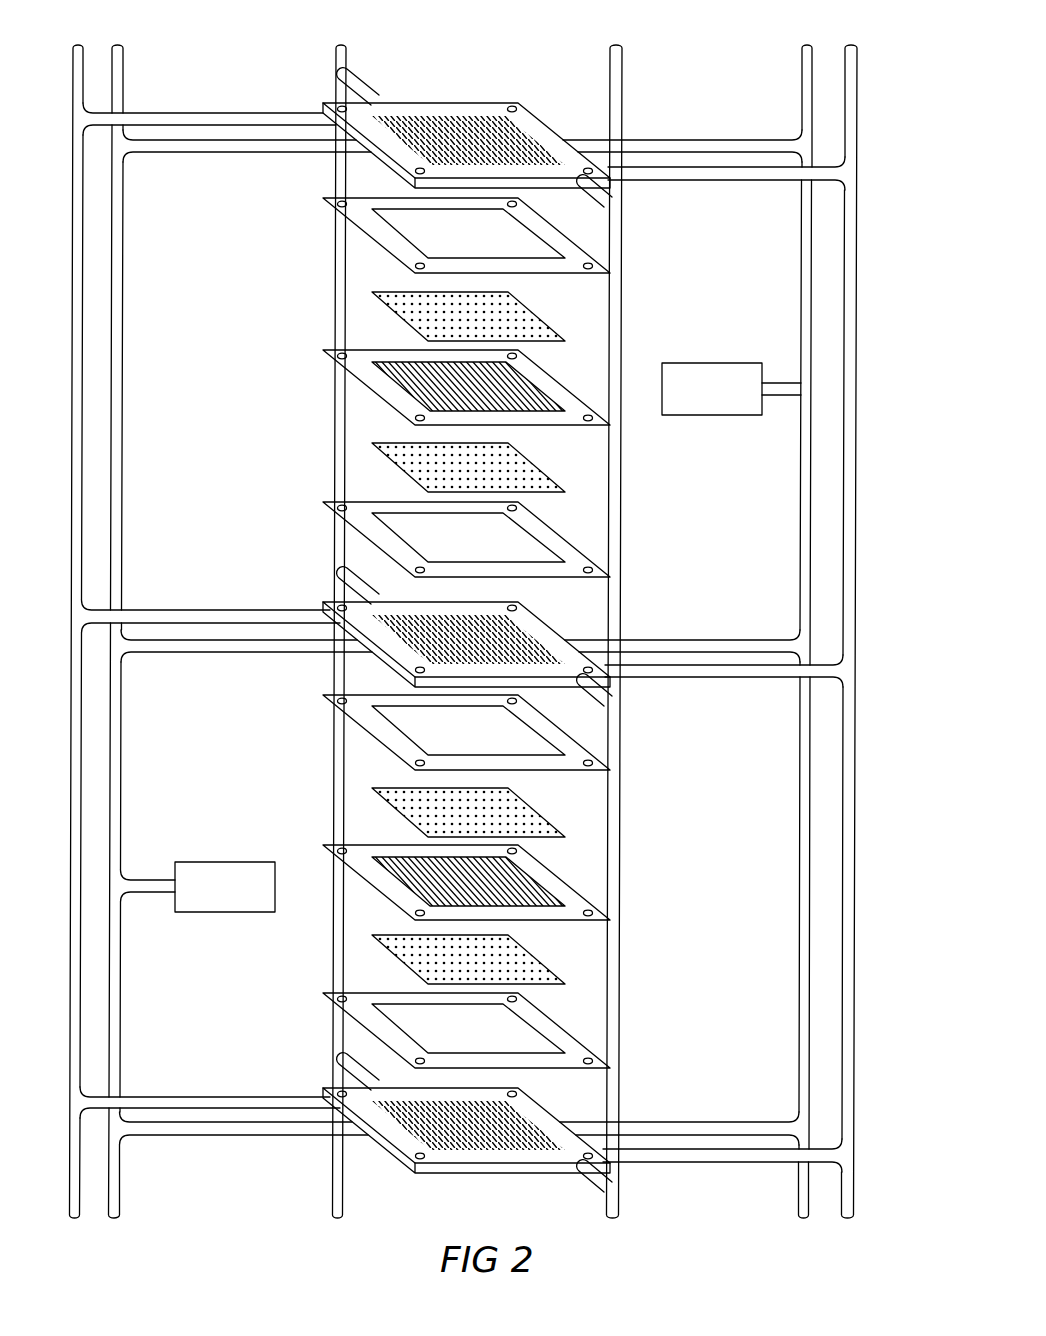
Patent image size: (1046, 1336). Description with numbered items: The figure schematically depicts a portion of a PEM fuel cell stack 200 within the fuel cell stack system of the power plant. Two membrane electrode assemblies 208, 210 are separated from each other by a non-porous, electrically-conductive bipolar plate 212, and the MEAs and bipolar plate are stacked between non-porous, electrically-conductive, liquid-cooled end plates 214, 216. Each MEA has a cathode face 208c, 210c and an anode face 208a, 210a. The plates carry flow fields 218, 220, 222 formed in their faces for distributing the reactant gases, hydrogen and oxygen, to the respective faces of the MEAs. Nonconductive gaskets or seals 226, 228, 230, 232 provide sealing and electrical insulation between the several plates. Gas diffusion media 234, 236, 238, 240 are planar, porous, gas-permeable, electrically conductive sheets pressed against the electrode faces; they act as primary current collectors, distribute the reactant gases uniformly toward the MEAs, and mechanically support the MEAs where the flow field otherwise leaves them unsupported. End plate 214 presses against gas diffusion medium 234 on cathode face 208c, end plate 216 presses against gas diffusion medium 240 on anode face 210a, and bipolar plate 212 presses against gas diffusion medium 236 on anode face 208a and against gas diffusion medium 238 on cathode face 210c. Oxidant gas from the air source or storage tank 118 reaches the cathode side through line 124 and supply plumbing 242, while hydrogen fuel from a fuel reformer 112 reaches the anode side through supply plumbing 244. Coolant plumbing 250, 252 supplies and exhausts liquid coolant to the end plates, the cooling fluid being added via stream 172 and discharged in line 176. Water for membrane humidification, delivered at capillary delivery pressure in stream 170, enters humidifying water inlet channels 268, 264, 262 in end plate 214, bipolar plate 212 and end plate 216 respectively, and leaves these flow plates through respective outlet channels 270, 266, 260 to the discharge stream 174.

The PEM fuel cell stack 200 is at (834, 1239).
The end plate 214 is at (392, 113).
The cooling fluid stream 172 is at (347, 57).
The cooling fluid discharge line 176 is at (612, 58).
The coolant plumbing 250 is at (362, 82).
The humidifying water inlet channel 268 is at (290, 115).
The outlet channel 270 is at (646, 165).
The flow field 218 is at (395, 143).
The coolant plumbing 252 is at (605, 192).
The gasket 226 is at (387, 240).
The gas diffusion medium 234 is at (392, 302).
The membrane electrode assembly 208 is at (447, 406).
The cathode face 208c is at (527, 387).
The air source/storage tank 118 is at (735, 368).
The humidification water discharge stream 174 is at (858, 345).
The humidification water stream 170 is at (85, 437).
The oxidant stream line 124 is at (783, 396).
The gas diffusion medium 236 is at (405, 460).
The anode face 208a is at (535, 423).
The supply plumbing 242 is at (813, 524).
The gasket 228 is at (360, 518).
The bipolar plate 212 is at (426, 620).
The humidifying water inlet channel 264 is at (262, 620).
The flow field 220 is at (530, 625).
The outlet channel 266 is at (625, 670).
The gasket 230 is at (572, 752).
The fuel reformer 112 is at (195, 862).
The cathode face 210c is at (395, 860).
The gas diffusion medium 238 is at (525, 815).
The membrane electrode assembly 210 is at (485, 865).
The anode face 210a is at (410, 892).
The gas diffusion medium 240 is at (530, 965).
The supply plumbing 244 is at (122, 1001).
The gasket 232 is at (555, 1030).
The humidifying water inlet channel 262 is at (295, 1098).
The end plate 216 is at (480, 1141).
The flow field 222 is at (400, 1130).
The outlet channel 260 is at (632, 1160).